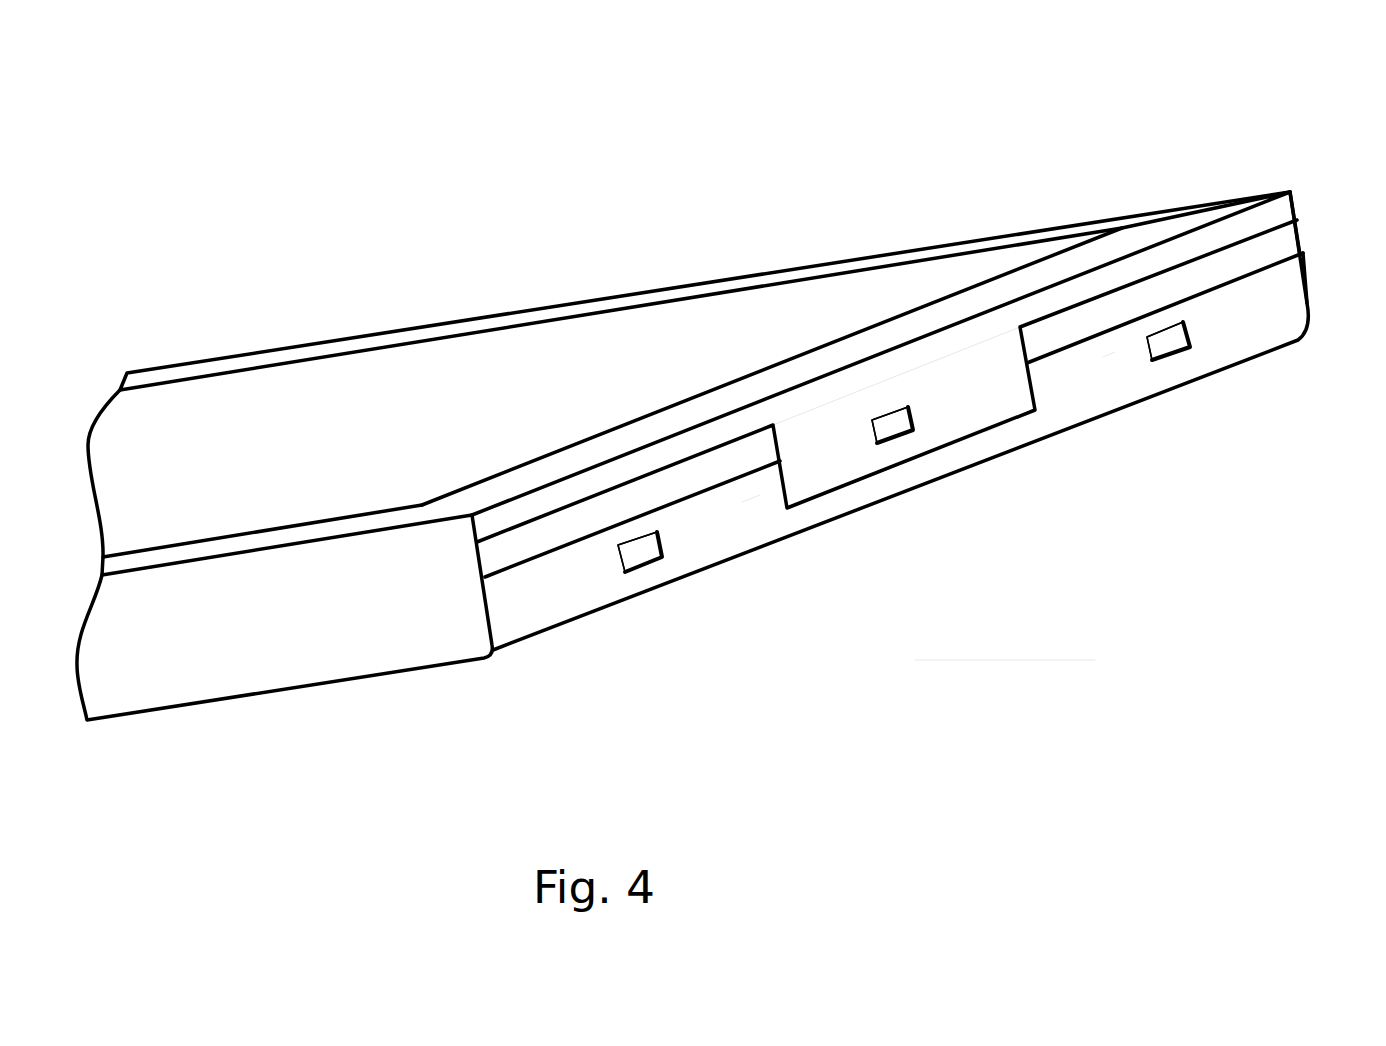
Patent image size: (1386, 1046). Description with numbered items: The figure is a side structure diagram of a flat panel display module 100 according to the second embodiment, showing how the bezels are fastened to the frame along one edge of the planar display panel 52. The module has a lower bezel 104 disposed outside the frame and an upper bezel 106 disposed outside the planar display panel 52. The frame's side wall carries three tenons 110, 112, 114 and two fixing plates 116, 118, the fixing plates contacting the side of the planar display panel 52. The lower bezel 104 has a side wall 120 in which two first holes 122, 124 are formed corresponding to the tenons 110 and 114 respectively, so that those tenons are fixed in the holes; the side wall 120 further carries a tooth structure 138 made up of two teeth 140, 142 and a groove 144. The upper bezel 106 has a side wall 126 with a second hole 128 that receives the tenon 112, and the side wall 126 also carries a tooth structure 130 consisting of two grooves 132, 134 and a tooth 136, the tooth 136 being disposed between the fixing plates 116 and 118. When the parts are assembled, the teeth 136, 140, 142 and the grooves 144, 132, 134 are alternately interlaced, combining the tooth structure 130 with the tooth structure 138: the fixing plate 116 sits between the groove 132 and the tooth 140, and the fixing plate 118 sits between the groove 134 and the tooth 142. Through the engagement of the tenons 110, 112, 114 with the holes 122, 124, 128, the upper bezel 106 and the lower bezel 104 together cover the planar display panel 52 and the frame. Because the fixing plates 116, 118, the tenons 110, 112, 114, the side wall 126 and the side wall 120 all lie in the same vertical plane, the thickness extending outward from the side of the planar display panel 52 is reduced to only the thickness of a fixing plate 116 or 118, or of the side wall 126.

The flat panel display module 100 is at (458, 142).
The planar display panel 52 is at (350, 395).
The lower bezel 104 is at (493, 657).
The upper bezel 106 is at (1187, 217).
The tenon 110 is at (633, 552).
The tenon 112 is at (885, 428).
The tenon 114 is at (1160, 343).
The fixing plate 116 is at (551, 535).
The fixing plate 118 is at (1282, 247).
The side wall 120 is at (1255, 342).
The first hole 122 is at (650, 563).
The first hole 124 is at (1180, 350).
The side wall 126 is at (1288, 208).
The second hole 128 is at (900, 435).
The tooth structure 130 is at (913, 178).
The groove 132 is at (737, 440).
The groove 134 is at (1023, 322).
The tooth 136 is at (880, 380).
The tooth structure 138 is at (1095, 660).
The tooth 140 is at (742, 502).
The tooth 142 is at (1103, 357).
The groove 144 is at (985, 432).